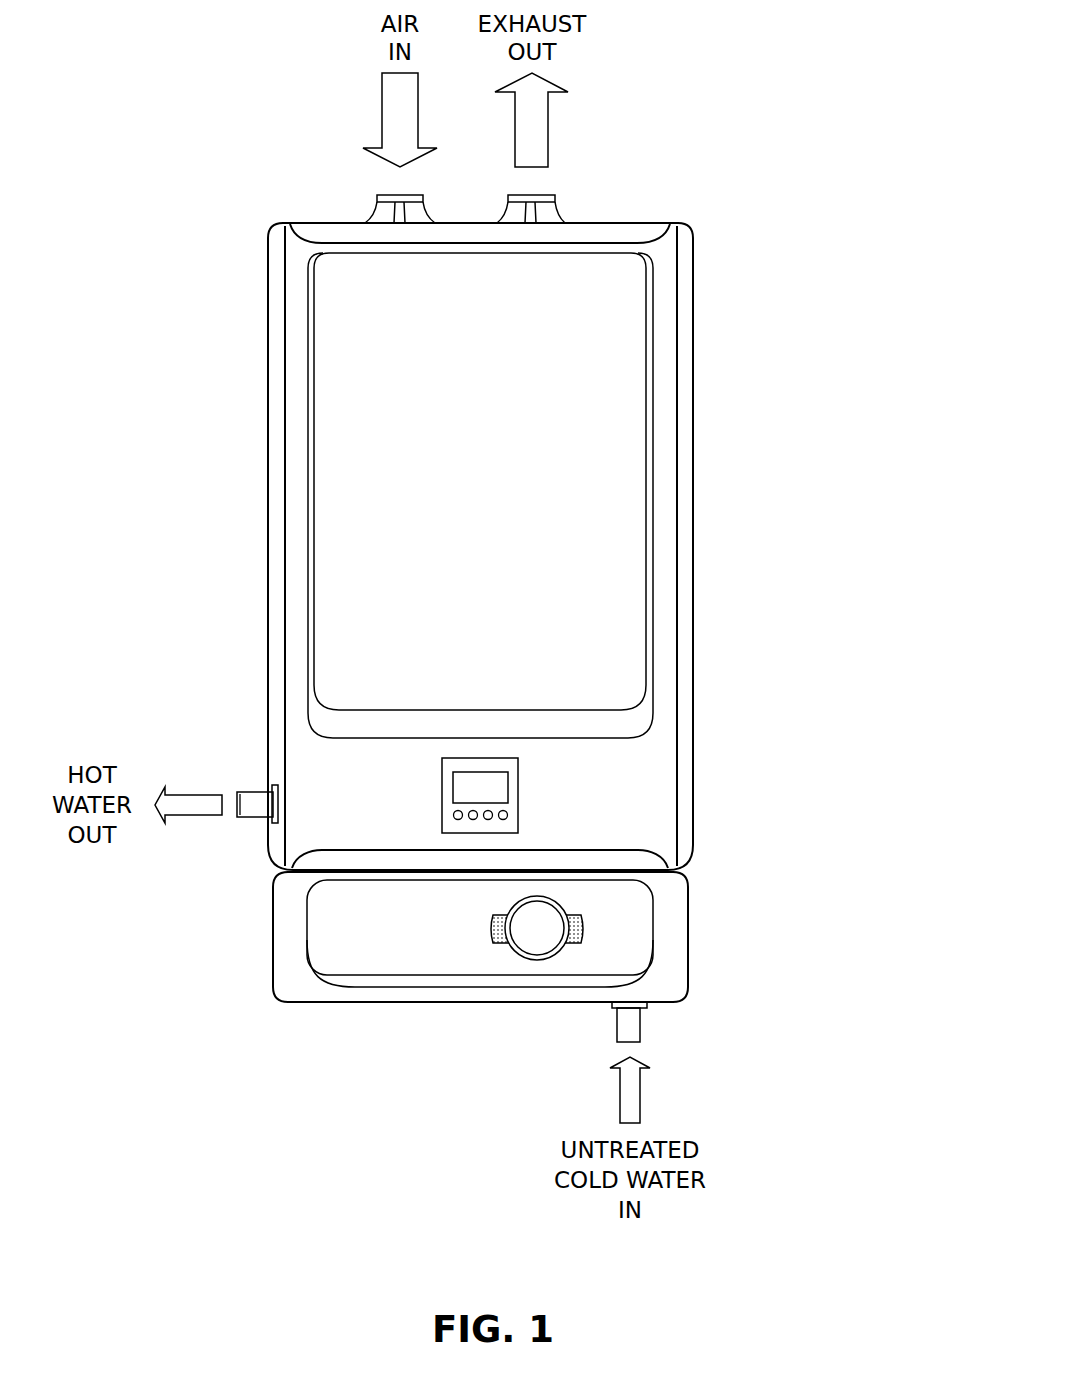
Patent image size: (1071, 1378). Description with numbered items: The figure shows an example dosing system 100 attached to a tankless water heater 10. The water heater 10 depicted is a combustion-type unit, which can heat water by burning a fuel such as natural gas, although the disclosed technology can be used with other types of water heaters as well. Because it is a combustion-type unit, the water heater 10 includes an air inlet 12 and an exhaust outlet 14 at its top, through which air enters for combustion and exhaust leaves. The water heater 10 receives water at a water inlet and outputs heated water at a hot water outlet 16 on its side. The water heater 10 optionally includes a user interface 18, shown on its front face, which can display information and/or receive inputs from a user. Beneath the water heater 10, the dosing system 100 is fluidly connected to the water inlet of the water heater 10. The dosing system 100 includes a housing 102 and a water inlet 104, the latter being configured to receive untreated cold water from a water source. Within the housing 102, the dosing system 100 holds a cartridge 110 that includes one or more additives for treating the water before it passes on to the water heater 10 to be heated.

The tankless water heater 10 is at (693, 505).
The air inlet 12 is at (368, 210).
The exhaust outlet 14 is at (563, 210).
The hot water outlet 16 is at (252, 817).
The user interface 18 is at (518, 813).
The dosing system 100 is at (550, 615).
The housing 102 is at (688, 945).
The water inlet 104 is at (615, 1022).
The cartridge 110 is at (505, 918).